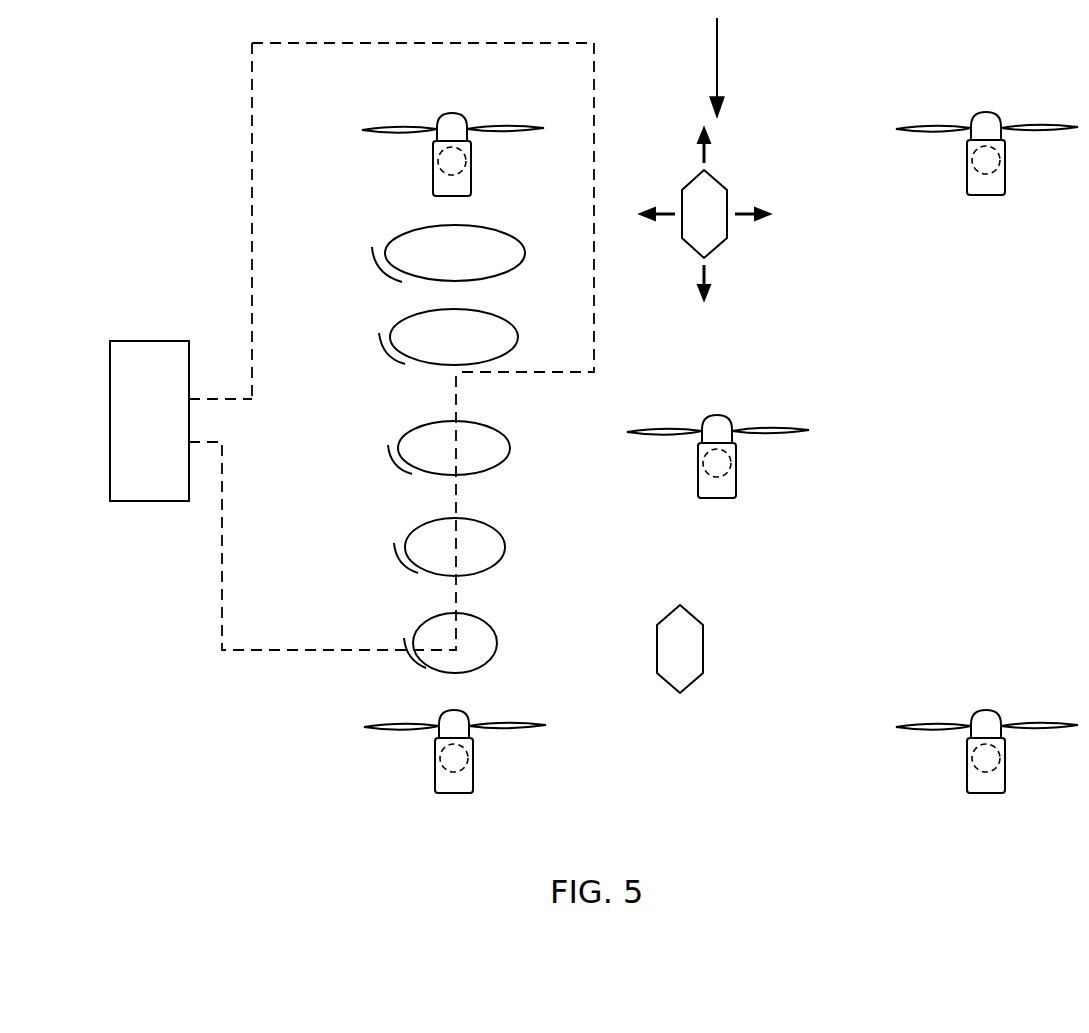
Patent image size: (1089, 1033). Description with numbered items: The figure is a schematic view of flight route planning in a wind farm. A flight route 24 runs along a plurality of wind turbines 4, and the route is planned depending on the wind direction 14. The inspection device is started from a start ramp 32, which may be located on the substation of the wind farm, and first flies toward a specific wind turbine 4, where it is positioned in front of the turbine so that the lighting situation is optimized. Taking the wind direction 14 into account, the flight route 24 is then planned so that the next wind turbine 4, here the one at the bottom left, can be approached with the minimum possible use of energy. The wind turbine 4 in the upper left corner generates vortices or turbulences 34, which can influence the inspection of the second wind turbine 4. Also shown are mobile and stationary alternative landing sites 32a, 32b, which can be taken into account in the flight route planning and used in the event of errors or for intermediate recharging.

The wind turbine 4 is at (470, 184).
The wind direction 14 is at (717, 64).
The flight route 24 is at (594, 285).
The start ramp 32 is at (145, 340).
The mobile alternative landing site 32a is at (727, 196).
The stationary alternative landing site 32b is at (703, 630).
The vortices or turbulences 34 is at (400, 236).